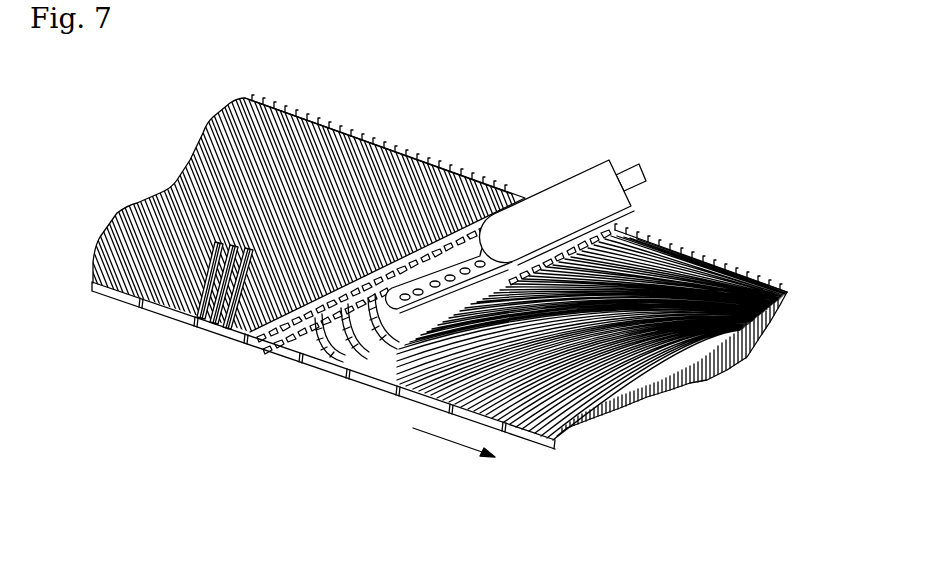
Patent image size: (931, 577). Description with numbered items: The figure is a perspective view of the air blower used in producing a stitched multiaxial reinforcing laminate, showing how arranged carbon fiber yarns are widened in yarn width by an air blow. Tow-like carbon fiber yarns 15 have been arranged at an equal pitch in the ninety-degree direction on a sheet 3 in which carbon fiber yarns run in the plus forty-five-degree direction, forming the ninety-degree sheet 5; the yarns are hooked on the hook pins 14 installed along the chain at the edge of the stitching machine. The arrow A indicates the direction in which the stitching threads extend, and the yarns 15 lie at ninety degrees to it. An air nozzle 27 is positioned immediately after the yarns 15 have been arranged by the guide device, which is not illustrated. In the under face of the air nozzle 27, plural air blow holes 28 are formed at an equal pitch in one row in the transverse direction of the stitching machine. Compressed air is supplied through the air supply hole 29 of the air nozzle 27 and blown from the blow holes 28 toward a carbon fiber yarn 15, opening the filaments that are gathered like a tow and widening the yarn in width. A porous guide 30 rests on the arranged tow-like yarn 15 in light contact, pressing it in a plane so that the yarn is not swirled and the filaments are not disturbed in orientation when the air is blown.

The sheet 3 is at (177, 190).
The sheet 5 is at (783, 302).
The hook pins 14 is at (340, 131).
The carbon fiber yarns 15 is at (205, 307).
The air nozzle 27 is at (562, 183).
The air blow holes 28 is at (452, 277).
The air supply hole 29 is at (647, 180).
The porous guide 30 is at (382, 347).
The arrow A is at (440, 437).